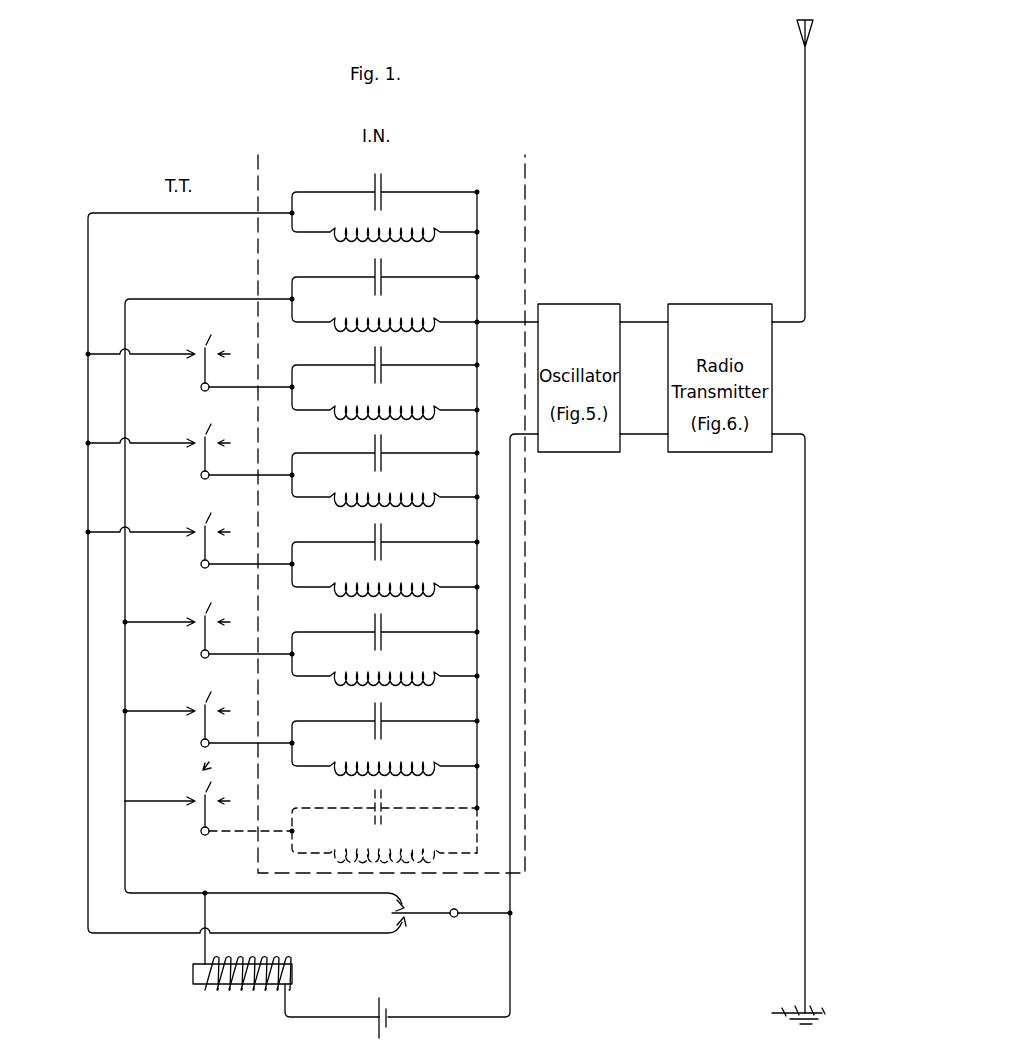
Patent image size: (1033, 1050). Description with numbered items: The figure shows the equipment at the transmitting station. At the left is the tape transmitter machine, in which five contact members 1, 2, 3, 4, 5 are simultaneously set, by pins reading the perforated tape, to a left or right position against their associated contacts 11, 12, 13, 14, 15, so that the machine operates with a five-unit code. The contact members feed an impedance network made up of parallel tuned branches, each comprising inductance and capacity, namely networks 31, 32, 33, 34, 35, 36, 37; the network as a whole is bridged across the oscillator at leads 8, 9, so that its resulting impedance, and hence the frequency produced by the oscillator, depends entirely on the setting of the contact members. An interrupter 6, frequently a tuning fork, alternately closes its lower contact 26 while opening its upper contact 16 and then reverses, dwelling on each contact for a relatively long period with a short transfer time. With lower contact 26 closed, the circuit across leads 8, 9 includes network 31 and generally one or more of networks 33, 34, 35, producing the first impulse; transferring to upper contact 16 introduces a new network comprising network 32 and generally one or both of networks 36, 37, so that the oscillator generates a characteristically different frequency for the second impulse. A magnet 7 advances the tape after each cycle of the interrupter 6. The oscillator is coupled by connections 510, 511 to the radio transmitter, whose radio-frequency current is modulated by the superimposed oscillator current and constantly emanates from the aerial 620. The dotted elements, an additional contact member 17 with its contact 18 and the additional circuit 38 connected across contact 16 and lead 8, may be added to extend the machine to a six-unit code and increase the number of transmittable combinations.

The contact member 1 is at (246, 358).
The contact member 2 is at (246, 446).
The contact member 3 is at (246, 535).
The contact member 4 is at (246, 625).
The contact member 5 is at (246, 714).
The interrupter 6 is at (449, 911).
The magnet 7 is at (201, 987).
The lead 8 is at (514, 319).
The lead 9 is at (514, 433).
The contact 11 is at (191, 352).
The contact 12 is at (191, 441).
The contact 13 is at (191, 530).
The contact 14 is at (191, 620).
The contact 15 is at (191, 709).
The upper contact 16 is at (396, 906).
The key switch 17 is at (246, 803).
The key contact 18 is at (191, 799).
The lower contact 26 is at (396, 928).
The network 31 is at (422, 224).
The network 32 is at (422, 309).
The network 33 is at (422, 397).
The network 34 is at (422, 485).
The network 35 is at (422, 574).
The network 36 is at (422, 664).
The network 37 is at (422, 753).
The circuit 38 is at (424, 844).
The oscillator output lead 510 is at (649, 317).
The transmitter return lead 511 is at (645, 438).
The aerial 620 is at (797, 30).